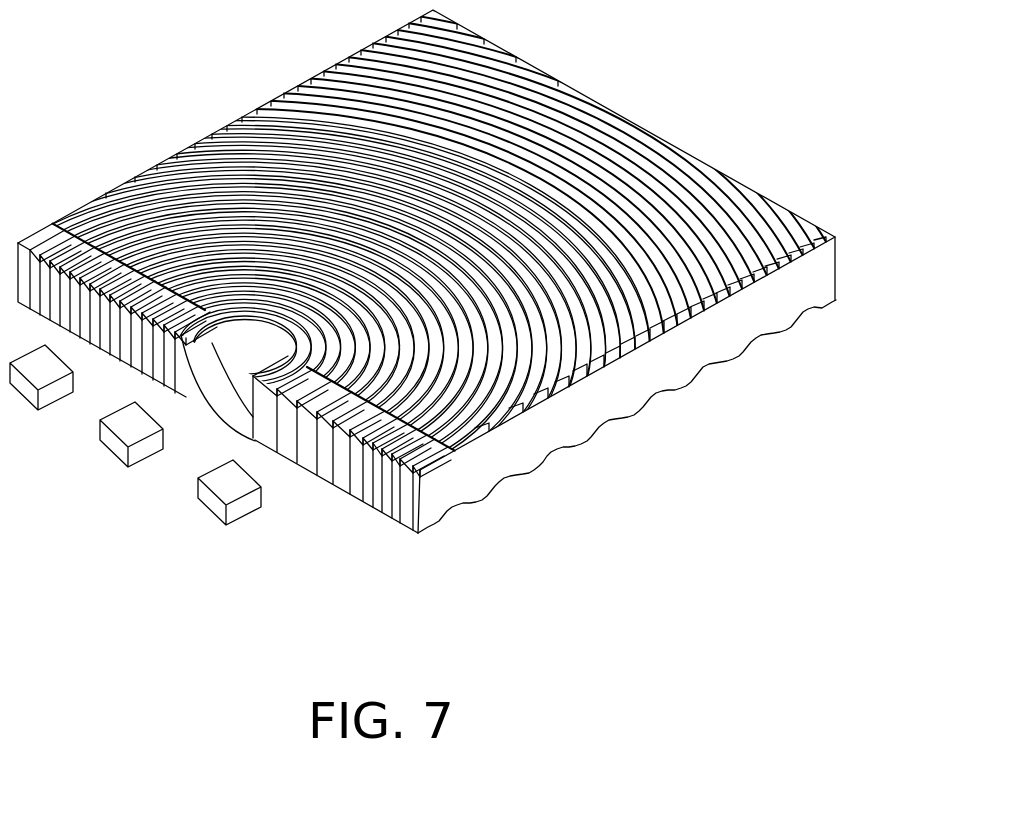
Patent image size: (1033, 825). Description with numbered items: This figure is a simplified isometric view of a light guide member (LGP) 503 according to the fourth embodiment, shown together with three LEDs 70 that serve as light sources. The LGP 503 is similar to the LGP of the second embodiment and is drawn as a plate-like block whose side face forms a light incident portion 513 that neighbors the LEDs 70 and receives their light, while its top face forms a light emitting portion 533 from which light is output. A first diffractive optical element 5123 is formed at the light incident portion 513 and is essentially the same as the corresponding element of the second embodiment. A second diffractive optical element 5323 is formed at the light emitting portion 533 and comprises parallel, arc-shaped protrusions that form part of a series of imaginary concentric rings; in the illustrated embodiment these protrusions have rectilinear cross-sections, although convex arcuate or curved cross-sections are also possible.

The light guide member (LGP) 503 is at (210, 117).
The second diffractive optical element 5323 is at (565, 62).
The light emitting portion 533 is at (826, 240).
The light incident portion 513 is at (411, 514).
The first diffractive optical element 5123 is at (352, 516).
The LEDs 70 is at (123, 433).